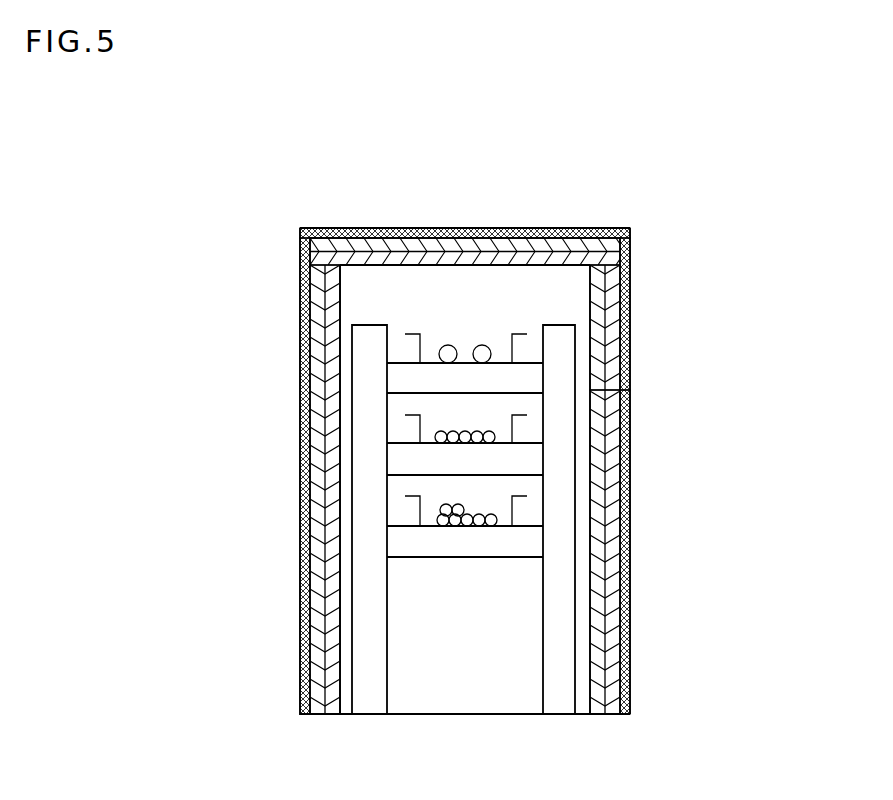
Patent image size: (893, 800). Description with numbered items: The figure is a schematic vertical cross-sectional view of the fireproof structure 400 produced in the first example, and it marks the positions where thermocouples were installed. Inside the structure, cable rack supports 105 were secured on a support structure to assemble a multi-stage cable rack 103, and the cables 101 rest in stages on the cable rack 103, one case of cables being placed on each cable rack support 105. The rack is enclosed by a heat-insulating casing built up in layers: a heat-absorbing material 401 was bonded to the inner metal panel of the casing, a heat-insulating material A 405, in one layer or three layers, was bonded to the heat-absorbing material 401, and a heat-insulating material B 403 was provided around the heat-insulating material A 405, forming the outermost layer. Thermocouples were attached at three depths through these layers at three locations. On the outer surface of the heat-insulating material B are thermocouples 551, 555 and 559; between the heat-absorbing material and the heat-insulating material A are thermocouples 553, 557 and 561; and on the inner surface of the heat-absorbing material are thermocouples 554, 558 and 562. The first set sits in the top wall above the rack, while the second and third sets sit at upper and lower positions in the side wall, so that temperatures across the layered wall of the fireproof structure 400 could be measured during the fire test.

The fireproof structure 400 is at (541, 190).
The heat-absorbing material 401 is at (630, 680).
The heat-insulating material B 403 is at (630, 630).
The heat-insulating material A 405 is at (630, 658).
The thermocouple 551 is at (467, 228).
The thermocouple 553 is at (467, 250).
The thermocouple 554 is at (467, 267).
The thermocouple 555 is at (630, 342).
The thermocouple 557 is at (607, 342).
The thermocouple 558 is at (592, 342).
The thermocouple 559 is at (630, 423).
The thermocouple 561 is at (607, 423).
The thermocouple 562 is at (592, 423).
The cables 101 is at (435, 518).
The cable rack 103 is at (525, 693).
The cable rack support 105 is at (448, 558).